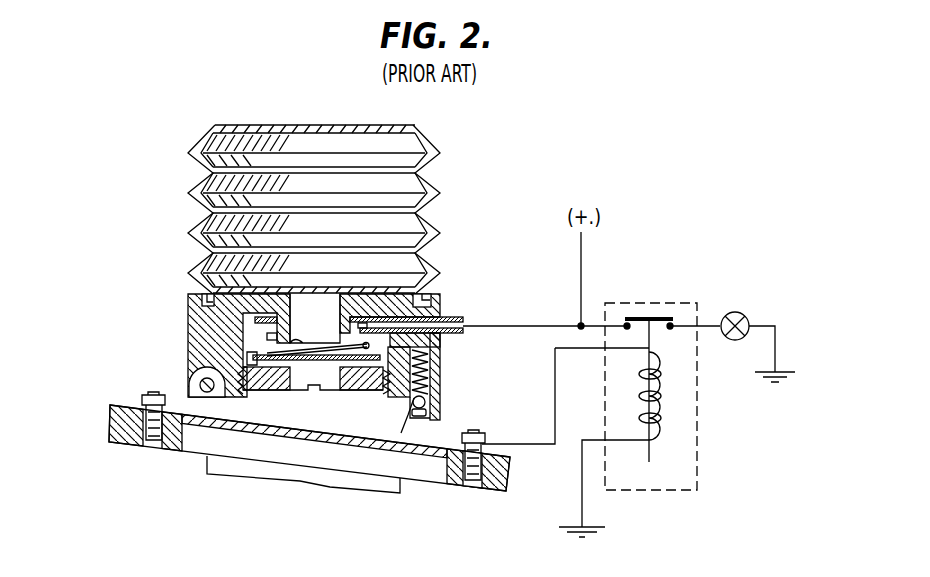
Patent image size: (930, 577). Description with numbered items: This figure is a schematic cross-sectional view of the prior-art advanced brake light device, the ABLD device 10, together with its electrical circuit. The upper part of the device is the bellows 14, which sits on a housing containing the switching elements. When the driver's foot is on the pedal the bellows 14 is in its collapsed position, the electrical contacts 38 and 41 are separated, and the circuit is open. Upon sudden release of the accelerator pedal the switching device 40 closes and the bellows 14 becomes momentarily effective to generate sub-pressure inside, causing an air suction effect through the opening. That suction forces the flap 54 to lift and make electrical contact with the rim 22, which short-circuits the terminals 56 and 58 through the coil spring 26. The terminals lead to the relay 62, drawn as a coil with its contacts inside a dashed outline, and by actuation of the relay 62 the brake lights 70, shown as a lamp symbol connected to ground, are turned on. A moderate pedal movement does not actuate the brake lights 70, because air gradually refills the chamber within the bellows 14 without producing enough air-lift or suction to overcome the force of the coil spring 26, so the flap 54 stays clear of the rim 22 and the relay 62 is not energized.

The ABLD device 10 is at (134, 199).
The bellows 14 is at (164, 133).
The rim 22 is at (297, 342).
The coil spring 26 is at (278, 343).
The electrical contact 38 is at (438, 380).
The switching device 40 is at (458, 397).
The electrical contact 41 is at (413, 428).
The flap 54 is at (267, 358).
The terminal 56 is at (547, 446).
The terminal 58 is at (512, 324).
The relay 62 is at (697, 485).
The brake lights 70 is at (735, 311).